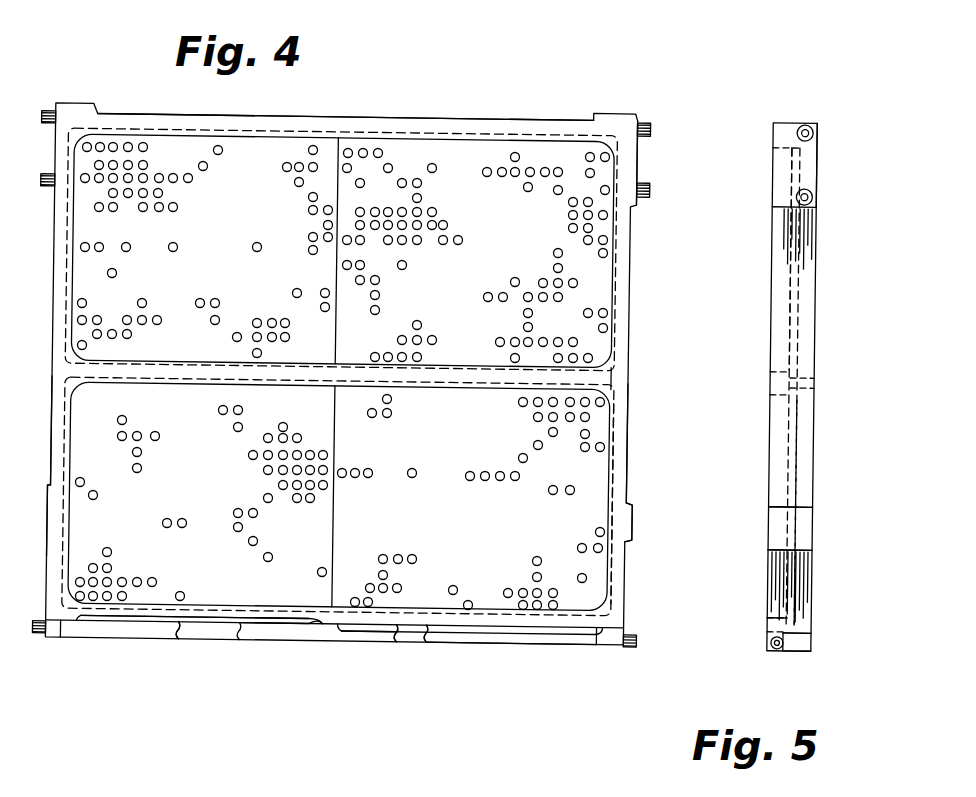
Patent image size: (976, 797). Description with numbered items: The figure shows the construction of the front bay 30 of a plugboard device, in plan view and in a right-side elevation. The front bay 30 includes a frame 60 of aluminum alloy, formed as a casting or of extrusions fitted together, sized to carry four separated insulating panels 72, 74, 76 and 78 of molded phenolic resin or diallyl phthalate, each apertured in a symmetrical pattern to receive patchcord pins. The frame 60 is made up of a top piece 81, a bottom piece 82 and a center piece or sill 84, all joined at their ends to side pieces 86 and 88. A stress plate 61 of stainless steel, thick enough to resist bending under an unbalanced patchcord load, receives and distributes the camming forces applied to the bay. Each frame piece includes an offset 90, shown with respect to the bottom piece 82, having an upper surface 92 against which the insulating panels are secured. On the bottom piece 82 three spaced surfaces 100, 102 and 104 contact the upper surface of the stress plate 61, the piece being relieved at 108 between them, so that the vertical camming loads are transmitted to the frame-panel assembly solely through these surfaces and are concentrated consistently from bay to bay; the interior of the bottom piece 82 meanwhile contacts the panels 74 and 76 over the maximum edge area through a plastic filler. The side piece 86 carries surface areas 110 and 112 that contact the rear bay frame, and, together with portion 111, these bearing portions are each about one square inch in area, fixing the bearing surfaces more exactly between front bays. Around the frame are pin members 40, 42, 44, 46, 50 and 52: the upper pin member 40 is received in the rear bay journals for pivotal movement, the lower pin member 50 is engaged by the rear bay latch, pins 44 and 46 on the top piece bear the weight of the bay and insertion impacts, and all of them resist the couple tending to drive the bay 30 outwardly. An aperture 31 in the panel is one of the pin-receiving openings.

In FIG. 4, the front bay 30 is at (333, 651).
In FIG. 5, the front bay 30 is at (792, 387).
In FIG. 4, the aperture 31 is at (143, 147).
In FIG. 4, the upper pin member 40 is at (47, 190).
In FIG. 4, the pin member 42 is at (652, 193).
In FIG. 5, the pin member 42 is at (811, 205).
In FIG. 4, the pin 44 is at (653, 125).
In FIG. 5, the pin 44 is at (812, 126).
In FIG. 4, the pin 46 is at (44, 112).
In FIG. 4, the lower pin member 50 is at (40, 638).
In FIG. 4, the pin member 52 is at (640, 645).
In FIG. 5, the pin member 52 is at (774, 643).
In FIG. 4, the frame 60 is at (596, 380).
In FIG. 4, the stress plate 61 is at (522, 648).
In FIG. 5, the stress plate 61 is at (798, 650).
In FIG. 4, the insulating panel 72 is at (328, 120).
In FIG. 4, the insulating panel 74 is at (193, 628).
In FIG. 4, the insulating panel 76 is at (618, 453).
In FIG. 5, the insulating panel 76 is at (797, 458).
In FIG. 4, the insulating panel 78 is at (603, 283).
In FIG. 5, the insulating panel 78 is at (790, 272).
In FIG. 4, the top piece 81 is at (437, 124).
In FIG. 4, the bottom piece 82 is at (412, 638).
In FIG. 4, the center piece or sill 84 is at (428, 382).
In FIG. 4, the side piece 86 is at (614, 490).
In FIG. 4, the side piece 88 is at (50, 431).
In FIG. 5, the offset 90 is at (814, 634).
In FIG. 4, the upper surface 92 is at (405, 620).
In FIG. 5, the upper surface 92 is at (788, 620).
In FIG. 4, the spaced surface 100 is at (63, 627).
In FIG. 4, the spaced surface 102 is at (312, 630).
In FIG. 4, the spaced surface 104 is at (590, 640).
In FIG. 4, the relief 108 is at (243, 630).
In FIG. 4, the surface area of contact 110 is at (628, 541).
In FIG. 5, the surface area of contact 110 is at (776, 530).
In FIG. 4, the portion 111 is at (48, 510).
In FIG. 4, the surface area of contact 112 is at (632, 150).
In FIG. 5, the surface area of contact 112 is at (806, 168).